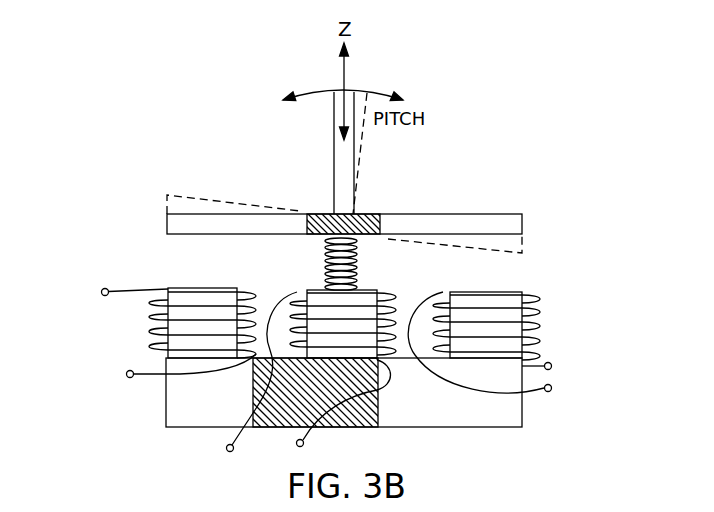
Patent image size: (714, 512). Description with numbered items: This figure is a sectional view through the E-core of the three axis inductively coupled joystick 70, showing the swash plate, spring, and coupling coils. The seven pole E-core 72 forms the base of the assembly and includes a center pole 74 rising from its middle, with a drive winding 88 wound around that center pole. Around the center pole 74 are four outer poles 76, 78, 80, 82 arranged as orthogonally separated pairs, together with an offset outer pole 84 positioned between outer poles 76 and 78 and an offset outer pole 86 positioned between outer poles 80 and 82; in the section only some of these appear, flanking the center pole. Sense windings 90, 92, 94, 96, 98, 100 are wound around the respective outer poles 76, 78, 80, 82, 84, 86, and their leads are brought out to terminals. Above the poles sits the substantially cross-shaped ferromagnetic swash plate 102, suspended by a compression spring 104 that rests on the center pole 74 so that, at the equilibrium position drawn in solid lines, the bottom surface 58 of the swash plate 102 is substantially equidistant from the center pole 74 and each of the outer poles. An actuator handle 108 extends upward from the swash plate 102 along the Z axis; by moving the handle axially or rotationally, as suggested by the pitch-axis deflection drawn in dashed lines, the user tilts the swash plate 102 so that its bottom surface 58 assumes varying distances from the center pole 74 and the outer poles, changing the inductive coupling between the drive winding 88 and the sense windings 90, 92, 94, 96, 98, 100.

The three axis joystick 70 is at (241, 155).
The bottom surface 58 is at (167, 222).
The swash plate 102 is at (438, 222).
The compression spring 104 is at (378, 214).
The actuator handle 108 is at (334, 172).
The drive winding 88 is at (297, 290).
The center pole 74 is at (370, 290).
The seven pole E-core 72 is at (464, 420).
The outer pole 80 is at (167, 306).
The outer pole 82 is at (167, 306).
The offset outer pole 86 is at (202, 288).
The outer pole 76 is at (504, 309).
The outer pole 78 is at (504, 309).
The offset outer pole 84 is at (465, 292).
The sense winding 94 is at (139, 333).
The sense winding 96 is at (139, 333).
The sense winding 100 is at (149, 349).
The sense winding 90 is at (523, 342).
The sense winding 92 is at (523, 342).
The sense winding 98 is at (540, 345).